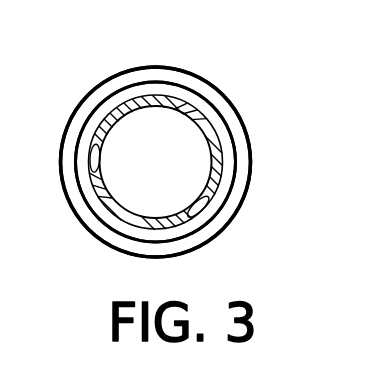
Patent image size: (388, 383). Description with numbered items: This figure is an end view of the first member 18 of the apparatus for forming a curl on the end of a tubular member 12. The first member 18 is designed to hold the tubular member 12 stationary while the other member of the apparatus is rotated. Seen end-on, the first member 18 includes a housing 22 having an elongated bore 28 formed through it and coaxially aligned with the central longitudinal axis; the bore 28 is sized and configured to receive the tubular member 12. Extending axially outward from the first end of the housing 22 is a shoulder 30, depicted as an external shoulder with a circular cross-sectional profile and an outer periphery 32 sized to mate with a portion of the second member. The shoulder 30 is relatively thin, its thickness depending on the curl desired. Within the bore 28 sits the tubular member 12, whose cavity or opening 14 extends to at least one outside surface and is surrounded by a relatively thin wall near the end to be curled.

The first member 18 is at (258, 36).
The housing 22 is at (223, 102).
The outer periphery 32 is at (237, 140).
The shoulder 30 is at (237, 169).
The cavity or opening 14 is at (93, 190).
The tubular member 12 is at (119, 105).
The bore 28 is at (206, 201).